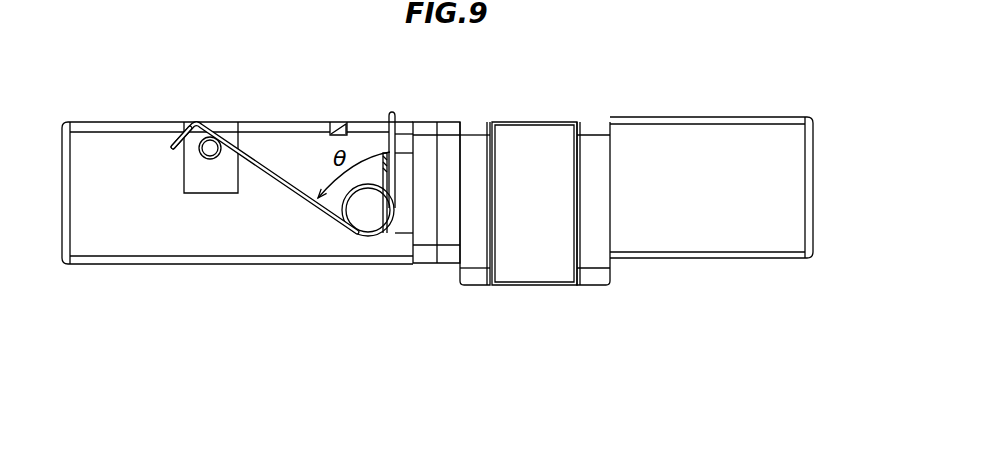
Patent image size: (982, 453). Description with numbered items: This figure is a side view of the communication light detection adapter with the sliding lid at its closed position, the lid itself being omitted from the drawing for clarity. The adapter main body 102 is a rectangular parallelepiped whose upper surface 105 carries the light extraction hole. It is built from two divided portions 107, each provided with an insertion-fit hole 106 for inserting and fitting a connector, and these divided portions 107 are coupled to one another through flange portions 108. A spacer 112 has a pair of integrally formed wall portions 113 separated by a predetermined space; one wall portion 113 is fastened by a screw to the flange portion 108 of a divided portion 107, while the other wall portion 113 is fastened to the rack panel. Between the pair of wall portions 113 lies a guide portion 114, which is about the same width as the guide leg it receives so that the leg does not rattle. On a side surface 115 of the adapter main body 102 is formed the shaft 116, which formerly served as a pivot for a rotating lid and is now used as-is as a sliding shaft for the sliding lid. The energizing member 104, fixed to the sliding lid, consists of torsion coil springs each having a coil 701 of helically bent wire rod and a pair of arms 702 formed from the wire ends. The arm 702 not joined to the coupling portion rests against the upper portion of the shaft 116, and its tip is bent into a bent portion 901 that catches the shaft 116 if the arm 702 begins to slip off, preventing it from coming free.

The adapter main body 102 is at (119, 271).
The energizing member 104 is at (398, 111).
The upper surface 105 is at (707, 117).
The insertion-fit hole 106 is at (812, 243).
The divided portion 107 is at (667, 258).
The flange portion 108 is at (423, 258).
The spacer 112 is at (504, 286).
The wall portion 113 is at (592, 276).
The guide portion 114 is at (548, 275).
The side surface 115 is at (740, 240).
The shaft 116 is at (205, 158).
The coil 701 is at (357, 240).
The arm 702 is at (285, 183).
The bent portion 901 is at (160, 134).